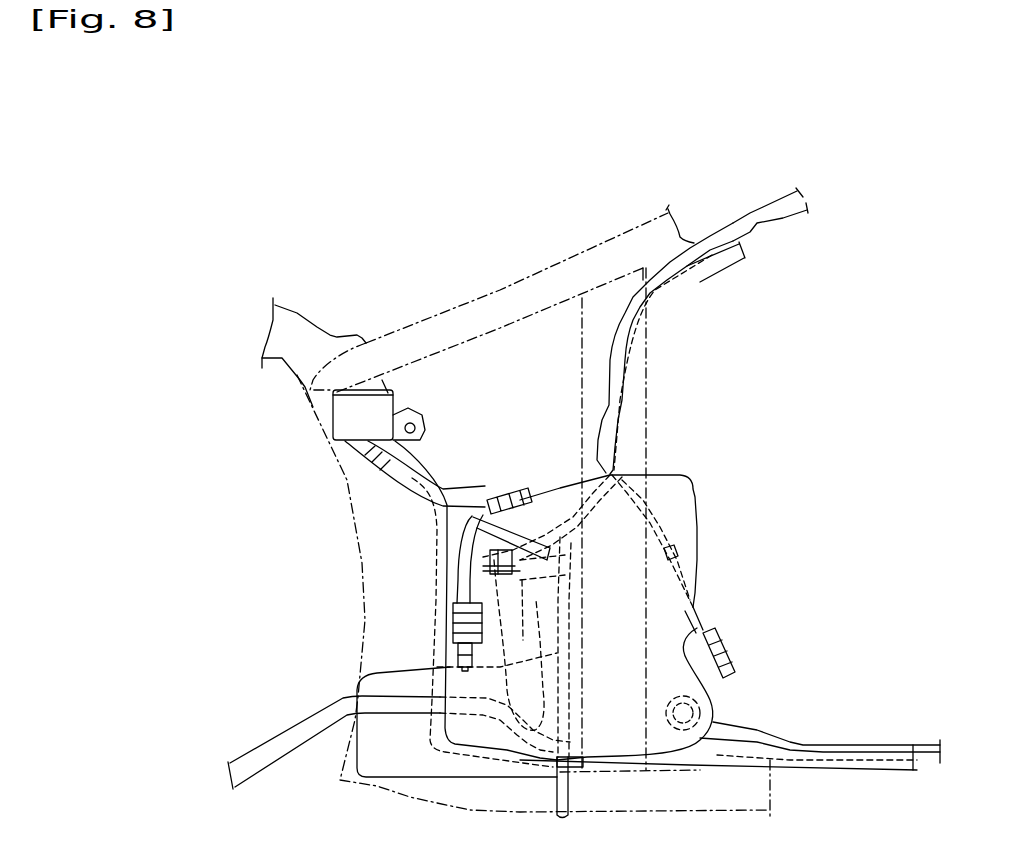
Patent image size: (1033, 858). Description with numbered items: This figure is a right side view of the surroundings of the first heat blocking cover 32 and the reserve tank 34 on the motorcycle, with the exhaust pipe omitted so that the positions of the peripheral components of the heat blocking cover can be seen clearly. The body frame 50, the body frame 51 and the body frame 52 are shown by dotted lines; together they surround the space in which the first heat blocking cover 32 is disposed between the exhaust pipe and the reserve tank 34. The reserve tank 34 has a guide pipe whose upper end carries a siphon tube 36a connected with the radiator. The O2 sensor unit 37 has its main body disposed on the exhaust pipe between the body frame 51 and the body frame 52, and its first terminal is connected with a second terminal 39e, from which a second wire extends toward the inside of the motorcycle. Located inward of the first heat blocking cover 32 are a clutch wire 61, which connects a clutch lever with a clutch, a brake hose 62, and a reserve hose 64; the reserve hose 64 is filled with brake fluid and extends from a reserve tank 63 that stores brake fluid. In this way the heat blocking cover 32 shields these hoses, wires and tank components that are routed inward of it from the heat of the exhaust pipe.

The first heat blocking cover 32 is at (686, 501).
The reserve tank 34 is at (380, 772).
The siphon tube 36a is at (753, 210).
The O2 sensor unit 37 is at (455, 633).
The second terminal 39e is at (522, 488).
The body frame 50 is at (503, 286).
The body frame 51 is at (643, 362).
The body frame 52 is at (330, 480).
The clutch wire 61 is at (620, 453).
The brake hose 62 is at (262, 762).
The reserve tank 63 is at (333, 425).
The reserve hose 64 is at (405, 470).